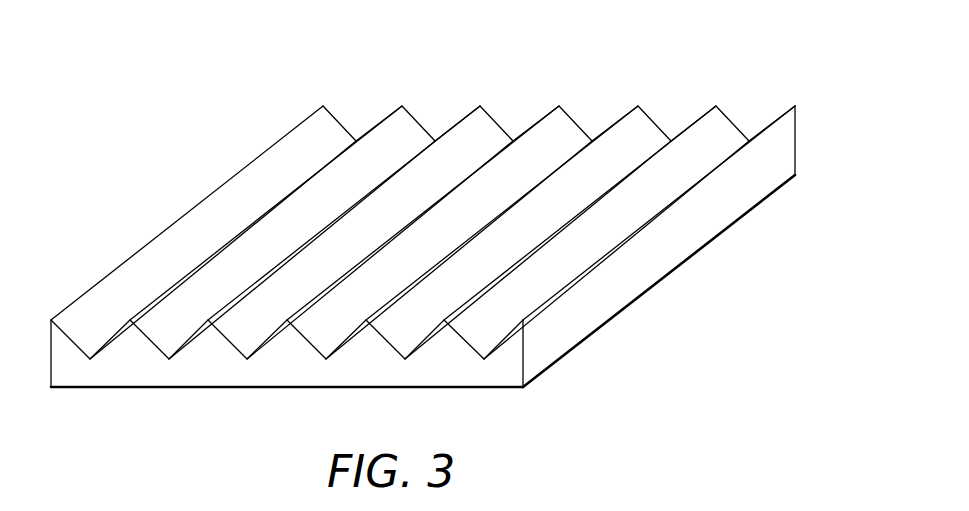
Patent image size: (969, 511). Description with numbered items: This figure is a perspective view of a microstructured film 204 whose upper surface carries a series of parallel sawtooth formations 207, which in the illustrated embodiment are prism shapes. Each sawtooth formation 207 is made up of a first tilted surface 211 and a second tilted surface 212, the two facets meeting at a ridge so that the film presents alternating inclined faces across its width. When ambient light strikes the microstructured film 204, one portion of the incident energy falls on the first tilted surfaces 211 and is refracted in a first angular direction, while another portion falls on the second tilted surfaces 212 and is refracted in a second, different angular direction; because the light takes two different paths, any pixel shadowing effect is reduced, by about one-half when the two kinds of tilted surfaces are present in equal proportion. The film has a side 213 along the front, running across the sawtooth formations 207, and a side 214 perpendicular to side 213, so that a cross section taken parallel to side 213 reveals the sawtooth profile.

The microstructured film 204 is at (423, 223).
The sawtooth formations 207 is at (402, 106).
The first tilted surface 211 is at (456, 122).
The second tilted surface 212 is at (493, 133).
The side 213 is at (201, 370).
The side 214 is at (682, 245).